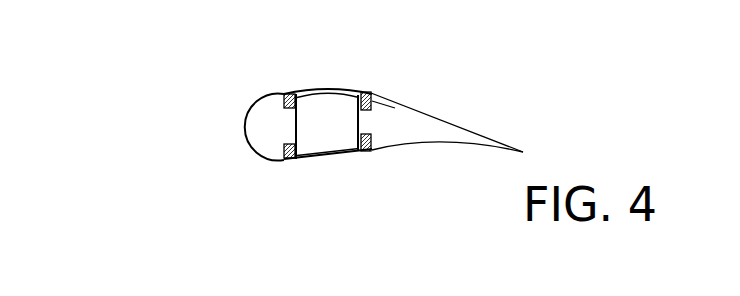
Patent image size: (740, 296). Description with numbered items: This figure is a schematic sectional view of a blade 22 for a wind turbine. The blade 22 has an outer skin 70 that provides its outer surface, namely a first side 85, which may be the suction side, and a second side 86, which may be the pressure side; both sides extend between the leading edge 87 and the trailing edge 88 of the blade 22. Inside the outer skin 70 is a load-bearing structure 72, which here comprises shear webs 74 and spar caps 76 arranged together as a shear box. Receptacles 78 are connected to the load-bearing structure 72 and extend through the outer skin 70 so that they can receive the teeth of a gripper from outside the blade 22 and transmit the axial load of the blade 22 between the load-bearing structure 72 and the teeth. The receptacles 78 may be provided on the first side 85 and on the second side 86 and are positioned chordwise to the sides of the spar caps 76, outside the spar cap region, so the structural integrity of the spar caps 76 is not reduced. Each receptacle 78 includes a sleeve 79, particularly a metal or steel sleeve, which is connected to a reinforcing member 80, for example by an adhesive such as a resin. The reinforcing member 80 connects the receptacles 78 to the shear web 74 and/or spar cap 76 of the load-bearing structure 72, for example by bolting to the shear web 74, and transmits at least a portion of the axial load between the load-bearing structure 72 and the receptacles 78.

The blade 22 is at (156, 54).
The outer skin 70 is at (492, 131).
The load-bearing structure 72 is at (258, 120).
The shear web 74 is at (284, 100).
The spar cap 76 is at (327, 88).
The receptacle 78 is at (368, 88).
The sleeve 79 is at (380, 101).
The reinforcing member 80 is at (400, 106).
The first side 85 is at (305, 87).
The second side 86 is at (313, 157).
The leading edge 87 is at (284, 127).
The trailing edge 88 is at (523, 152).